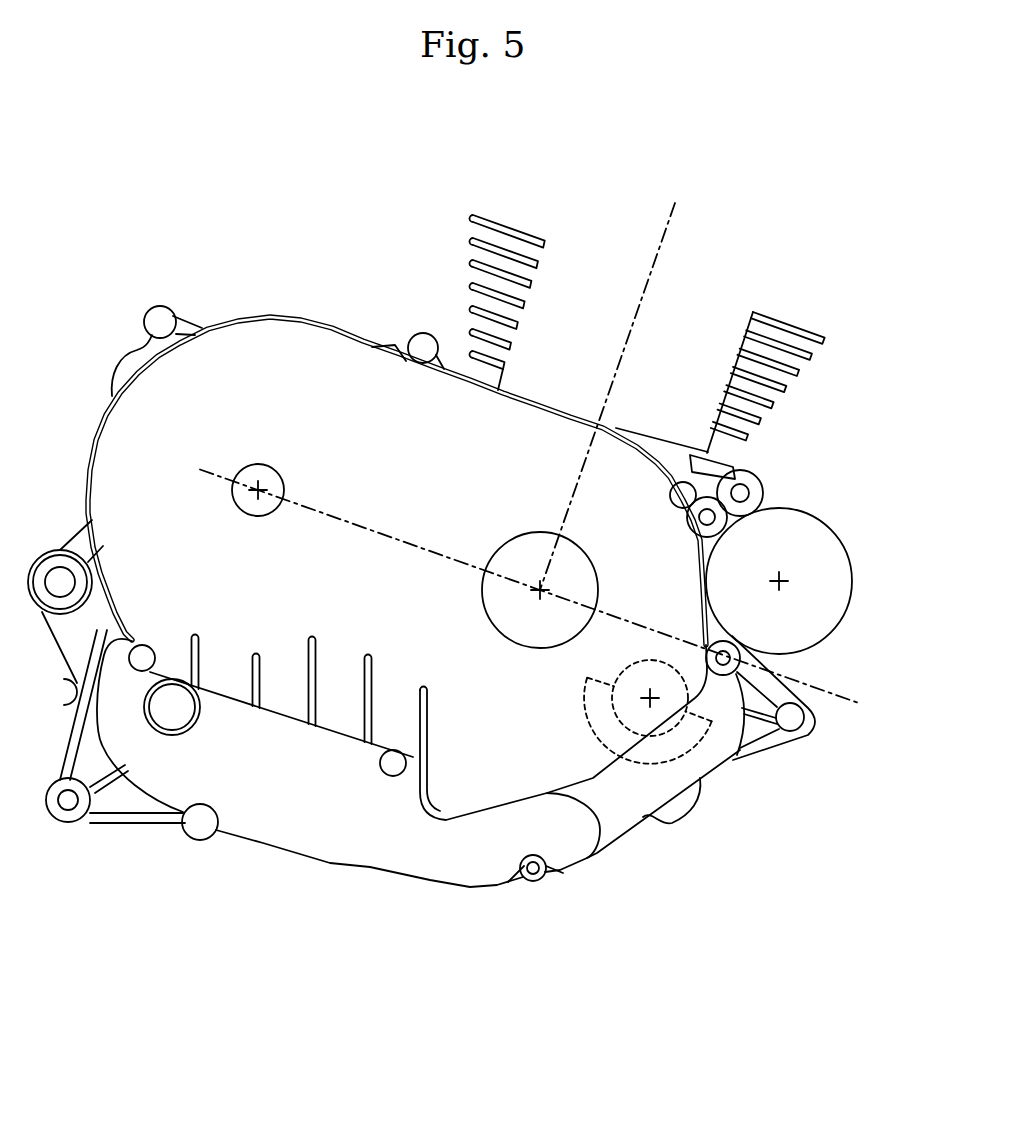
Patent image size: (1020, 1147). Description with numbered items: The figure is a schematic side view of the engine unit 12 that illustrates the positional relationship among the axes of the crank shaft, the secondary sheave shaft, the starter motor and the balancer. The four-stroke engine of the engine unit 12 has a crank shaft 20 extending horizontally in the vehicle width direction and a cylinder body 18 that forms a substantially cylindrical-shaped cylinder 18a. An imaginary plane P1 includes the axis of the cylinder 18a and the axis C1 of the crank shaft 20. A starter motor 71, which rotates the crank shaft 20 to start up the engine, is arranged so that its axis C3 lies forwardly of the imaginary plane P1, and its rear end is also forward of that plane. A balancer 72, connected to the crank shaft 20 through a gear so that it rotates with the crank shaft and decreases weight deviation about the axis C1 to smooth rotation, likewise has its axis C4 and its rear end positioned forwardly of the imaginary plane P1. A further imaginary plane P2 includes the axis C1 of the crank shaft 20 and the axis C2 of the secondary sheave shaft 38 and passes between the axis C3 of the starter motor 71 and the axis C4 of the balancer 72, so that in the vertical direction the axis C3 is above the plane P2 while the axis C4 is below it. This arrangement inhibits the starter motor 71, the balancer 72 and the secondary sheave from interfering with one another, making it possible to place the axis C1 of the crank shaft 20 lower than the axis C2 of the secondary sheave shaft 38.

The engine unit 12 is at (603, 872).
The cylinder body 18 is at (773, 317).
The cylinder 18a is at (600, 317).
The crank shaft 20 is at (515, 535).
The secondary sheave shaft 38 is at (276, 472).
The starter motor 71 is at (850, 556).
The balancer 72 is at (737, 758).
The axis of crank shaft C1 is at (539, 591).
The axis of secondary sheave shaft C2 is at (259, 491).
The axis of starter motor C3 is at (780, 580).
The axis of balancer C4 is at (651, 699).
The imaginary plane P1 is at (660, 234).
The imaginary plane P2 is at (823, 692).